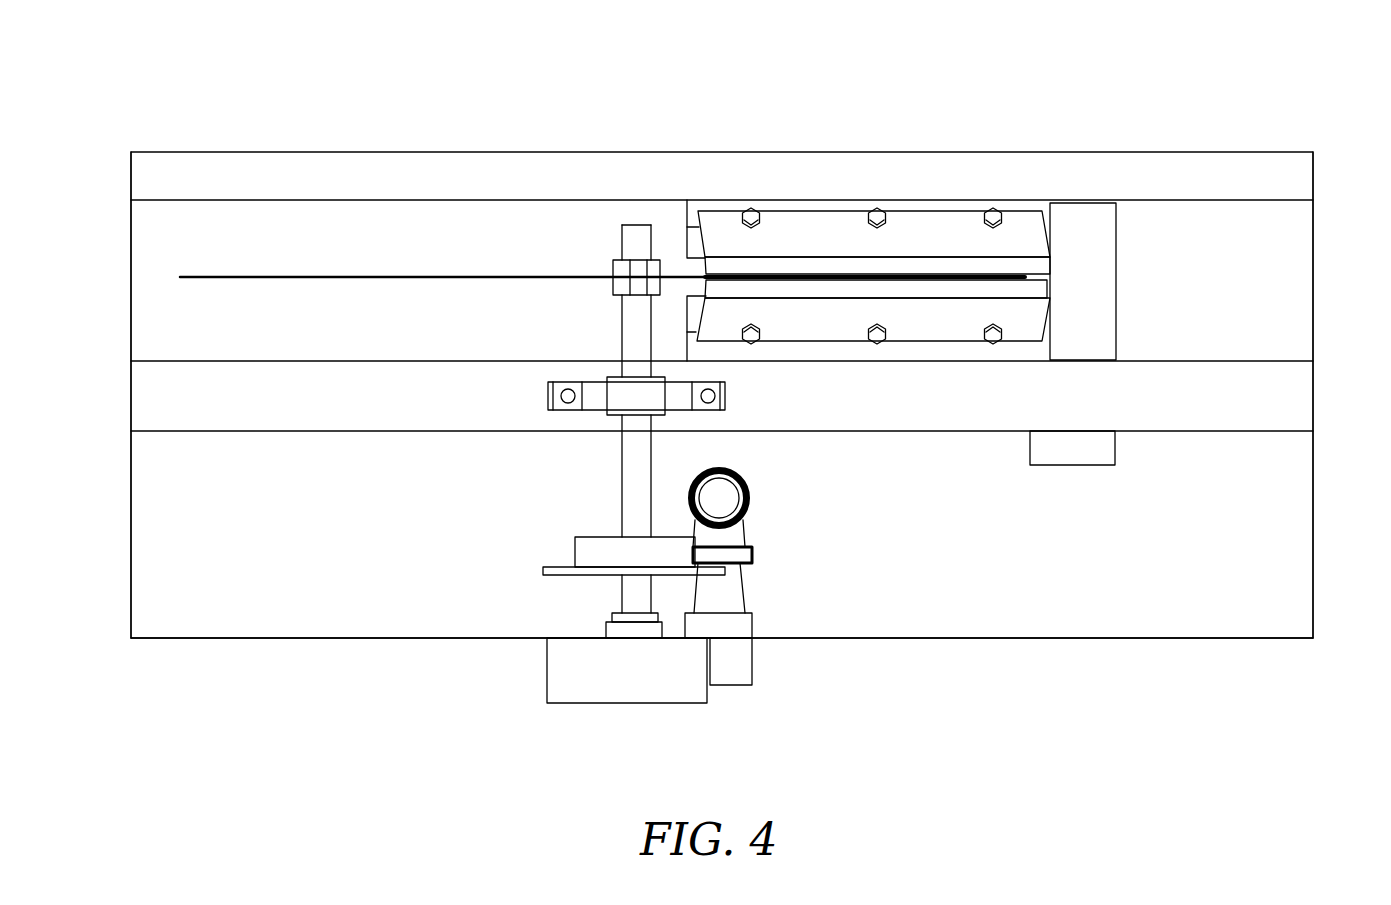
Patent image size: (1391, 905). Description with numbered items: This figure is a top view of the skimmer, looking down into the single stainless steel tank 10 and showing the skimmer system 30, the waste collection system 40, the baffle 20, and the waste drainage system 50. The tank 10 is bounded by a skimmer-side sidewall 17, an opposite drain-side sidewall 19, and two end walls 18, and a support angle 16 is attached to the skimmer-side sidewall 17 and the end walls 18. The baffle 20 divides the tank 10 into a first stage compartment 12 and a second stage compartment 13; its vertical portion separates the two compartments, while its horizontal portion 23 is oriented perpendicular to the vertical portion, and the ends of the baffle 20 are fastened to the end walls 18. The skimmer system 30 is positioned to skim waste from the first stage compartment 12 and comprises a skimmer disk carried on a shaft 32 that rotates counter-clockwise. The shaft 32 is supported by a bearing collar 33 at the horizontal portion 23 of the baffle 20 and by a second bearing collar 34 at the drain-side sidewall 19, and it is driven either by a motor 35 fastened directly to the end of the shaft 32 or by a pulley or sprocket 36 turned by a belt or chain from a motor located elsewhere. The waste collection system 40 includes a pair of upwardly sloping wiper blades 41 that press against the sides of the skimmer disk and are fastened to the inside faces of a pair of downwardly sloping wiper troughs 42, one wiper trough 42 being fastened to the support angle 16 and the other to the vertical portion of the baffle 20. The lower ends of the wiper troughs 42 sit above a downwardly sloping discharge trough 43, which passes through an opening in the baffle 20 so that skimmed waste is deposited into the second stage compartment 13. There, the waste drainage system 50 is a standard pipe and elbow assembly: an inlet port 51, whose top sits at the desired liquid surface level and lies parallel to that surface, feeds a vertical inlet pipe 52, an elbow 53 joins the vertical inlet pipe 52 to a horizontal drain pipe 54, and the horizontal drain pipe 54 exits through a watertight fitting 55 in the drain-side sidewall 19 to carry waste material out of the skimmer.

The tank 10 is at (1212, 103).
The first stage compartment 12 is at (1160, 285).
The second stage compartment 13 is at (1000, 560).
The support angle 16 is at (920, 168).
The skimmer-side sidewall 17 is at (823, 148).
The end walls 18 is at (130, 402).
The drain-side sidewall 19 is at (943, 641).
The baffle 20 is at (1193, 351).
The horizontal portion 23 is at (1222, 414).
The skimmer system 30 is at (493, 262).
The shaft 32 is at (621, 478).
The bearing collar 33 is at (685, 395).
The bearing collar 34 is at (607, 627).
The motor 35 is at (565, 690).
The pulley or sprocket 36 is at (582, 555).
The waste collection system 40 is at (1130, 233).
The wiper blades 41 is at (1042, 312).
The wiper troughs 42 is at (692, 307).
The discharge trough 43 is at (1100, 452).
The waste drainage system 50 is at (780, 545).
The inlet port 51 is at (725, 502).
The vertical inlet pipe 52 is at (735, 470).
The elbow 53 is at (738, 533).
The horizontal drain pipe 54 is at (735, 600).
The watertight fitting 55 is at (730, 663).